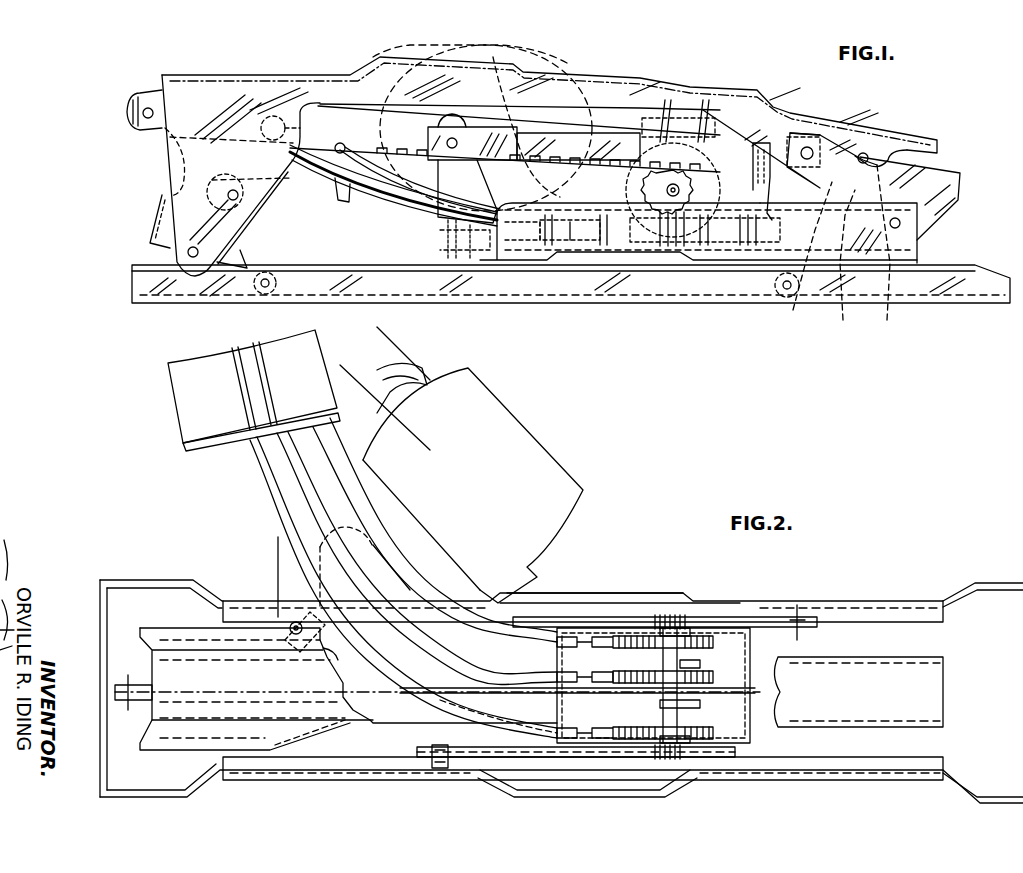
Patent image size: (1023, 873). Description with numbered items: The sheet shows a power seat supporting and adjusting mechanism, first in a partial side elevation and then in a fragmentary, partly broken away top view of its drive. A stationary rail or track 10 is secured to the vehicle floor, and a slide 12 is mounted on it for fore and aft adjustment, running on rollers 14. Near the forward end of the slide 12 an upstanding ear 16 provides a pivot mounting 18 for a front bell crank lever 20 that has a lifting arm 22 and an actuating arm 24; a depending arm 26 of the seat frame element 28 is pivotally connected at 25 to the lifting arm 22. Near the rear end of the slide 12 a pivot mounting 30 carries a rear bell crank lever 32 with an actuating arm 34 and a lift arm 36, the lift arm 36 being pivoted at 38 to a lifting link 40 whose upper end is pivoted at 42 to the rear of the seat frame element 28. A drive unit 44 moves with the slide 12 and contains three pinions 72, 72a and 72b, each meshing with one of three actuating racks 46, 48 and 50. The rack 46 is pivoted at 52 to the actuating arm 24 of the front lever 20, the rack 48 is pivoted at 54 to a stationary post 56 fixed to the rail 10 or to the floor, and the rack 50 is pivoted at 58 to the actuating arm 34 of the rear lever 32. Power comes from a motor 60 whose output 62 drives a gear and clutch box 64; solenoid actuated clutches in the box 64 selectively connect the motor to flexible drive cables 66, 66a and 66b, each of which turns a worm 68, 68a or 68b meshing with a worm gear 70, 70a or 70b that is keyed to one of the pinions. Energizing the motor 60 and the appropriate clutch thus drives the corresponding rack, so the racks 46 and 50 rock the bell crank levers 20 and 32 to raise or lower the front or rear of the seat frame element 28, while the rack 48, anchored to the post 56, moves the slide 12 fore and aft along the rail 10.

In FIG. 1, the stationary rail or track 10 is at (145, 281).
In FIG. 2, the stationary rail or track 10 is at (993, 583).
In FIG. 1, the slide 12 is at (347, 257).
In FIG. 1, the rollers 14 is at (300, 300).
In FIG. 1, the upstanding ear 16 is at (262, 140).
In FIG. 1, the pivot mounting 18 is at (226, 186).
In FIG. 1, the bell crank lever 20 is at (158, 152).
In FIG. 1, the lifting arm 22 is at (150, 222).
In FIG. 1, the actuating arm 24 is at (127, 110).
In FIG. 1, the pivot connection 25 is at (193, 258).
In FIG. 1, the depending arm 26 is at (250, 227).
In FIG. 2, the depending arm 26 is at (338, 655).
In FIG. 1, the seat frame element 28 is at (296, 76).
In FIG. 2, the seat frame element 28 is at (172, 628).
In FIG. 1, the pivot mounting 30 is at (899, 228).
In FIG. 1, the bell crank lever 32 is at (958, 194).
In FIG. 1, the actuating arm 34 is at (832, 140).
In FIG. 1, the lift arm 36 is at (796, 258).
In FIG. 1, the pivot connection 38 is at (853, 262).
In FIG. 1, the lifting link 40 is at (893, 249).
In FIG. 1, the pivot connection 42 is at (870, 152).
In FIG. 1, the drive unit 44 is at (678, 117).
In FIG. 1, the rack 46 is at (372, 162).
In FIG. 2, the rack 46 is at (443, 690).
In FIG. 1, the rack 48 is at (485, 157).
In FIG. 2, the rack 48 is at (470, 752).
In FIG. 1, the rack 50 is at (560, 140).
In FIG. 2, the rack 50 is at (560, 600).
In FIG. 1, the pivot connection 52 is at (146, 108).
In FIG. 1, the pivot connection 54 is at (452, 149).
In FIG. 2, the pivot connection 54 is at (430, 748).
In FIG. 1, the stationary post 56 is at (432, 213).
In FIG. 2, the stationary post 56 is at (510, 780).
In FIG. 1, the pivot connection 58 is at (810, 147).
In FIG. 1, the motor 60 is at (495, 56).
In FIG. 2, the motor 60 is at (533, 448).
In FIG. 2, the output 62 is at (428, 370).
In FIG. 2, the gear and clutch box 64 is at (168, 412).
In FIG. 1, the flexible drive cable 66 is at (571, 254).
In FIG. 2, the flexible drive cable 66 is at (498, 716).
In FIG. 1, the flexible drive cable 66a is at (345, 202).
In FIG. 2, the flexible drive cable 66a is at (500, 663).
In FIG. 1, the flexible drive cable 66b is at (312, 168).
In FIG. 2, the flexible drive cable 66b is at (470, 620).
In FIG. 1, the worm 68 is at (650, 252).
In FIG. 2, the worm 68 is at (708, 734).
In FIG. 2, the worm 68a is at (708, 681).
In FIG. 2, the worm 68b is at (690, 664).
In FIG. 1, the worm gear 70 is at (762, 188).
In FIG. 2, the worm gear 70 is at (640, 727).
In FIG. 2, the worm gear 70a is at (630, 672).
In FIG. 2, the worm gear 70b is at (706, 642).
In FIG. 1, the pinion 72 is at (650, 190).
In FIG. 2, the pinion 72 is at (642, 757).
In FIG. 2, the pinion 72a is at (693, 710).
In FIG. 2, the pinion 72b is at (672, 617).